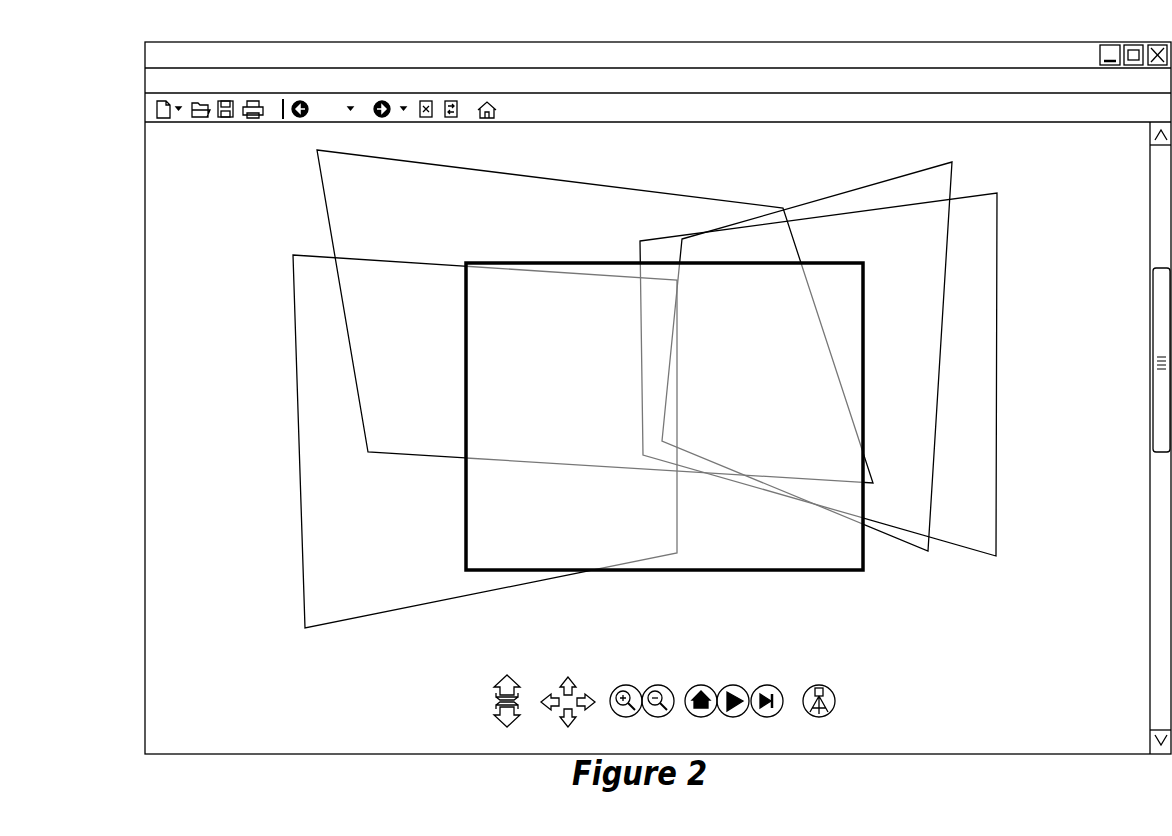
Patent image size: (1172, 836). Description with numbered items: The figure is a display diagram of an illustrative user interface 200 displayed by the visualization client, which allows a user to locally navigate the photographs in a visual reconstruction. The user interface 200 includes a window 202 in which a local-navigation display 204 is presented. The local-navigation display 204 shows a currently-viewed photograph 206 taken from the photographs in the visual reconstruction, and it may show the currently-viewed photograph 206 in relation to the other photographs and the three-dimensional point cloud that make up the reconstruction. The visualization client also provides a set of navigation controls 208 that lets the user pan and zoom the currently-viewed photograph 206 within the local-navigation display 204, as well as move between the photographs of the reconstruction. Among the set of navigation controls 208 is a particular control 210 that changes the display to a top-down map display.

The user interface 200 is at (123, 94).
The window 202 is at (163, 190).
The local-navigation display 204 is at (300, 230).
The currently-viewed photograph 206 is at (820, 573).
The set of navigation controls 208 is at (469, 694).
The control to change the display to a top-down map display 210 is at (823, 689).